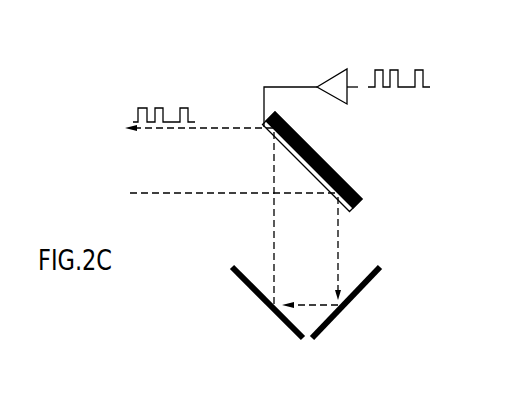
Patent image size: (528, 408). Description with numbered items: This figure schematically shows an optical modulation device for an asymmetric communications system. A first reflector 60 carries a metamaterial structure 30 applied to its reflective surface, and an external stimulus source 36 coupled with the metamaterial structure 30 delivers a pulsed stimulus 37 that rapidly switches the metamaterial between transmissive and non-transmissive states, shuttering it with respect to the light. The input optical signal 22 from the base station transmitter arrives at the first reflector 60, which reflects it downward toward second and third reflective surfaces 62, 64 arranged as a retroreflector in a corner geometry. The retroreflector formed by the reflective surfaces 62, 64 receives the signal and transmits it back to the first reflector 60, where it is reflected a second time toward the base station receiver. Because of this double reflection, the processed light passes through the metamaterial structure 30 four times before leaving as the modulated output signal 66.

The optical signal 22 is at (195, 194).
The metamaterial structure 30 is at (270, 135).
The external stimulus source 36 is at (325, 84).
The pulsed stimulus 37 is at (425, 70).
The reflector 60 is at (337, 168).
The second reflective surface 62 is at (372, 287).
The third reflective surface 64 is at (247, 285).
The modulated output signal 66 is at (220, 128).